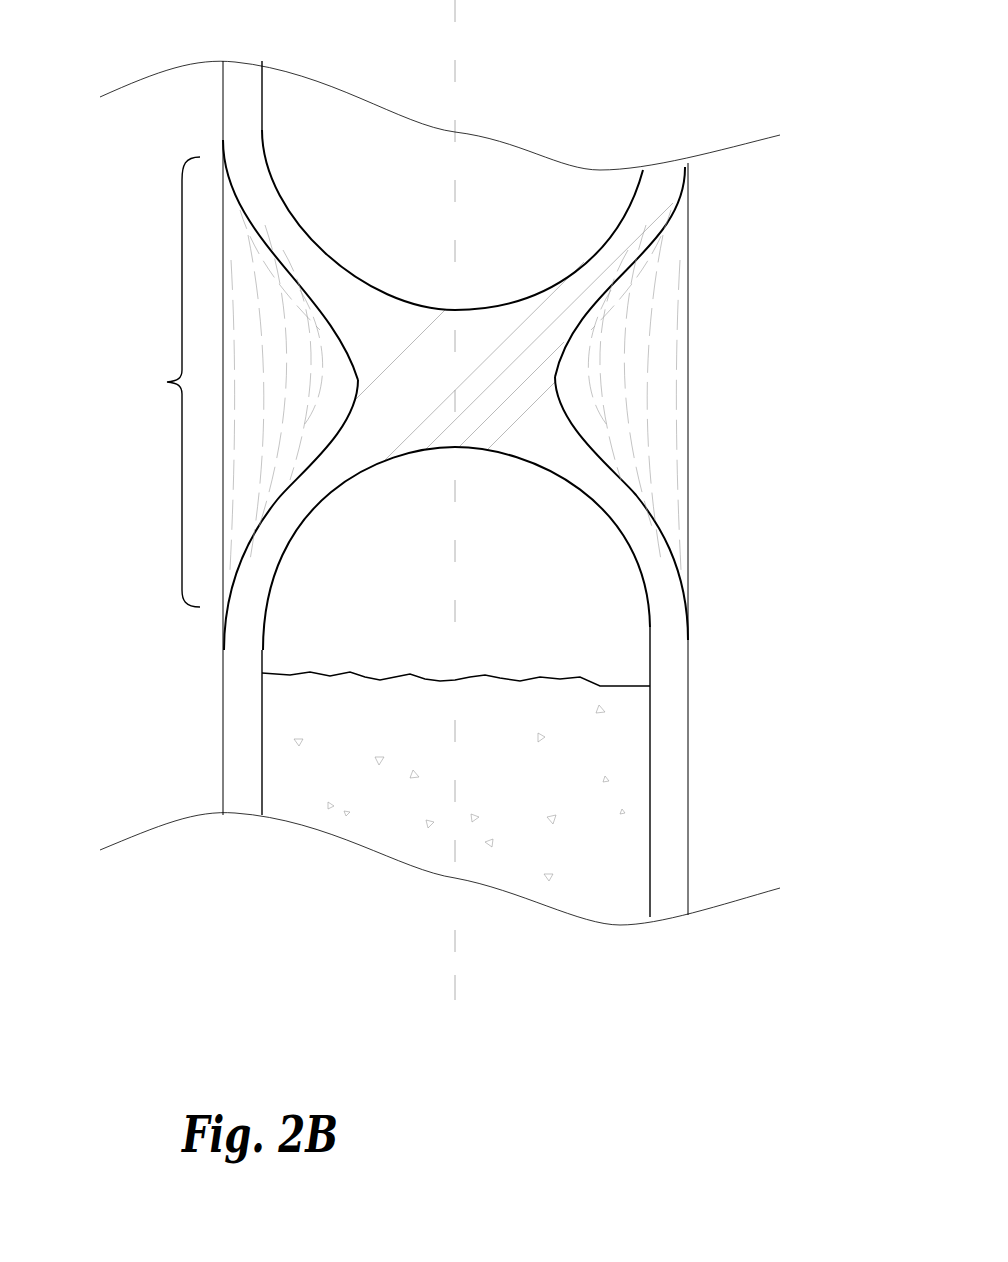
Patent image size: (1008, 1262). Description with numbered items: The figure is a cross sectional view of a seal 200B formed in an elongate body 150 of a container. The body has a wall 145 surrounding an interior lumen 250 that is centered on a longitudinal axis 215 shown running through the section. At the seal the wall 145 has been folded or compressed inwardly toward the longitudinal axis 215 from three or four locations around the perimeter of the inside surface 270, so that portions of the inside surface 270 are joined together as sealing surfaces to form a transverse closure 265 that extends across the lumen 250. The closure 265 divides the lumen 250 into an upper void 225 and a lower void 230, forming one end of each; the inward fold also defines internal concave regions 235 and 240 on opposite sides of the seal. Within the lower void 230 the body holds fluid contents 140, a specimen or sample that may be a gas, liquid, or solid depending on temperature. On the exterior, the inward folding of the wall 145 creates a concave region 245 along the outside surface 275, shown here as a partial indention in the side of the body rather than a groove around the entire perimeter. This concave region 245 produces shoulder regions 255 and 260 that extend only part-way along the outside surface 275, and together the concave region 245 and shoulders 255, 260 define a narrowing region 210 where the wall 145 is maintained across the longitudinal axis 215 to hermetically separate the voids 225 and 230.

The fluid contents 140 is at (597, 743).
The wall 145 is at (677, 660).
The elongate body 150 is at (692, 800).
The seal 200B is at (740, 360).
The narrowing region 210 is at (237, 395).
The longitudinal axis 215 is at (455, 48).
The void 225 is at (592, 220).
The void 230 is at (585, 583).
The internal concave region 235 is at (408, 230).
The internal concave region 240 is at (425, 510).
The concave region 245 is at (350, 413).
The interior lumen 250 is at (505, 185).
The shoulder region 255 is at (277, 258).
The shoulder region 260 is at (307, 463).
The closure 265 is at (473, 417).
The inside surface 270 is at (262, 97).
The outside surface 275 is at (223, 668).